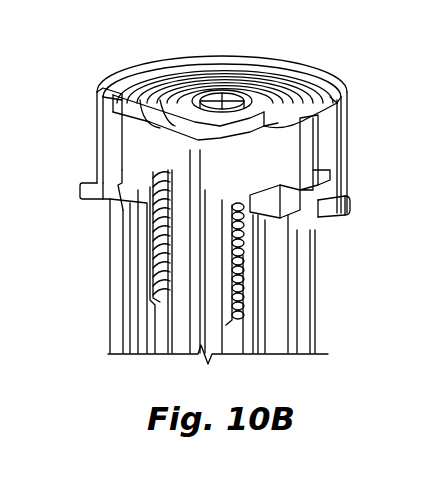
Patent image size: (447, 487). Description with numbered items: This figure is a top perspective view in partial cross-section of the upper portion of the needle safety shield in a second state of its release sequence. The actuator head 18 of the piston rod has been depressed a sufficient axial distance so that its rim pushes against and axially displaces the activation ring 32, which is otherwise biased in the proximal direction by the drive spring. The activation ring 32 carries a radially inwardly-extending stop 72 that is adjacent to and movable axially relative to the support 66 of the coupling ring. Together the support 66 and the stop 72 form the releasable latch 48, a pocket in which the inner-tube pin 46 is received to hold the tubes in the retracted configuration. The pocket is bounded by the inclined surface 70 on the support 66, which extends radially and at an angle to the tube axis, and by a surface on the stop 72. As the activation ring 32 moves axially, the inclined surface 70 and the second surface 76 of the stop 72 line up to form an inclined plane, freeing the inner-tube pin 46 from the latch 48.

The actuator head 18 is at (128, 96).
The second surface of the stop 76 is at (240, 118).
The inner-tube pin 46 is at (339, 101).
The inclined surface 70 is at (298, 150).
The support 66 is at (262, 215).
The stop 72 is at (278, 228).
The activation ring 32 is at (120, 172).
The releasable latch 48 is at (262, 245).